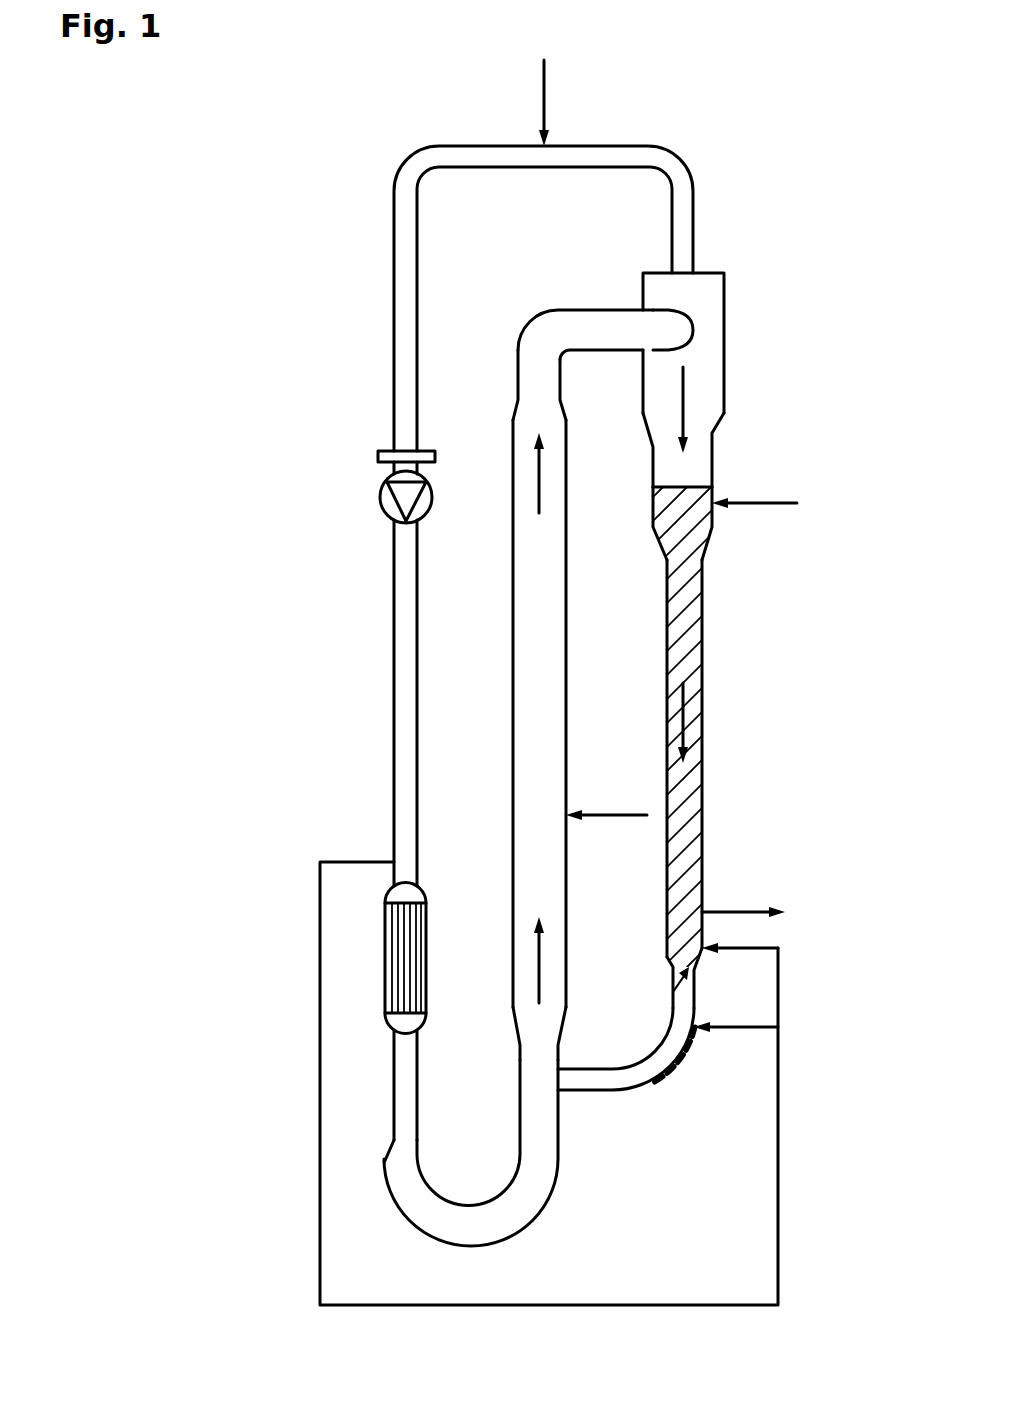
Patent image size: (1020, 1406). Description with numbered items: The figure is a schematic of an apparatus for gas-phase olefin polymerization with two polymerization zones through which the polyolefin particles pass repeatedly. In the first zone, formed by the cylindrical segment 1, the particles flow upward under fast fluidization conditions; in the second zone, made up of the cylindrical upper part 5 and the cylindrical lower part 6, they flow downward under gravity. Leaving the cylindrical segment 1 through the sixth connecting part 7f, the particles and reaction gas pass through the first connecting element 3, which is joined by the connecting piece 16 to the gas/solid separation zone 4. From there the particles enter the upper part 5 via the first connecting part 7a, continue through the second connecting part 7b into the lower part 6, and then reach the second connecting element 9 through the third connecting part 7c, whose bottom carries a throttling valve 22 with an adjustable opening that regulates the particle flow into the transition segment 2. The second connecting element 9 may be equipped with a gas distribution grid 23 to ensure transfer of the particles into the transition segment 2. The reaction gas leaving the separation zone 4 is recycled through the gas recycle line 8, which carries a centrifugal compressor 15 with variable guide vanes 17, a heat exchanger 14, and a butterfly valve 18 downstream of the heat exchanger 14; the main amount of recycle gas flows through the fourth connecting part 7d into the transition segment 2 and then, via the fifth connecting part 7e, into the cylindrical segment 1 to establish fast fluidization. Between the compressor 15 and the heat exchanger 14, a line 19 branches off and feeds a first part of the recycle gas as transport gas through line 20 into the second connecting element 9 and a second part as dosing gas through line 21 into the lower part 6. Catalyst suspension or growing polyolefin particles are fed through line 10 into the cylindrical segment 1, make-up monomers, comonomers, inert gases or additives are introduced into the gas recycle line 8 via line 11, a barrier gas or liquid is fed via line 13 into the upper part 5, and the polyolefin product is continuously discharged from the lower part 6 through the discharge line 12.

The cylindrical segment 1 is at (566, 678).
The transition segment 2 is at (702, 625).
The first connecting element 3 is at (612, 310).
The gas/solid separation zone 4 is at (724, 300).
The upper part of the second polymerization zone 5 is at (653, 462).
The lower part of the second polymerization zone 6 is at (702, 668).
The first connecting part 7a is at (712, 426).
The second connecting part 7b is at (705, 545).
The third connecting part 7c is at (665, 960).
The fourth connecting part 7d is at (420, 1140).
The fifth connecting part 7e is at (513, 1023).
The sixth connecting part 7f is at (513, 398).
The gas recycle line 8 is at (394, 740).
The second connecting element 9 is at (643, 1090).
The line 10 is at (617, 813).
The line 11 is at (544, 86).
The discharge line 12 is at (745, 912).
The line 13 is at (797, 503).
The heat exchanger 14 is at (426, 958).
The centrifugal compressor 15 is at (380, 500).
The connecting piece 16 is at (677, 333).
The variable guide vanes 17 is at (378, 457).
The butterfly valve 18 is at (404, 1070).
The line 19 is at (778, 1197).
The line 20 is at (748, 1027).
The line 21 is at (768, 948).
The throttling valve 22 is at (673, 992).
The gas distribution grid 23 is at (677, 1058).